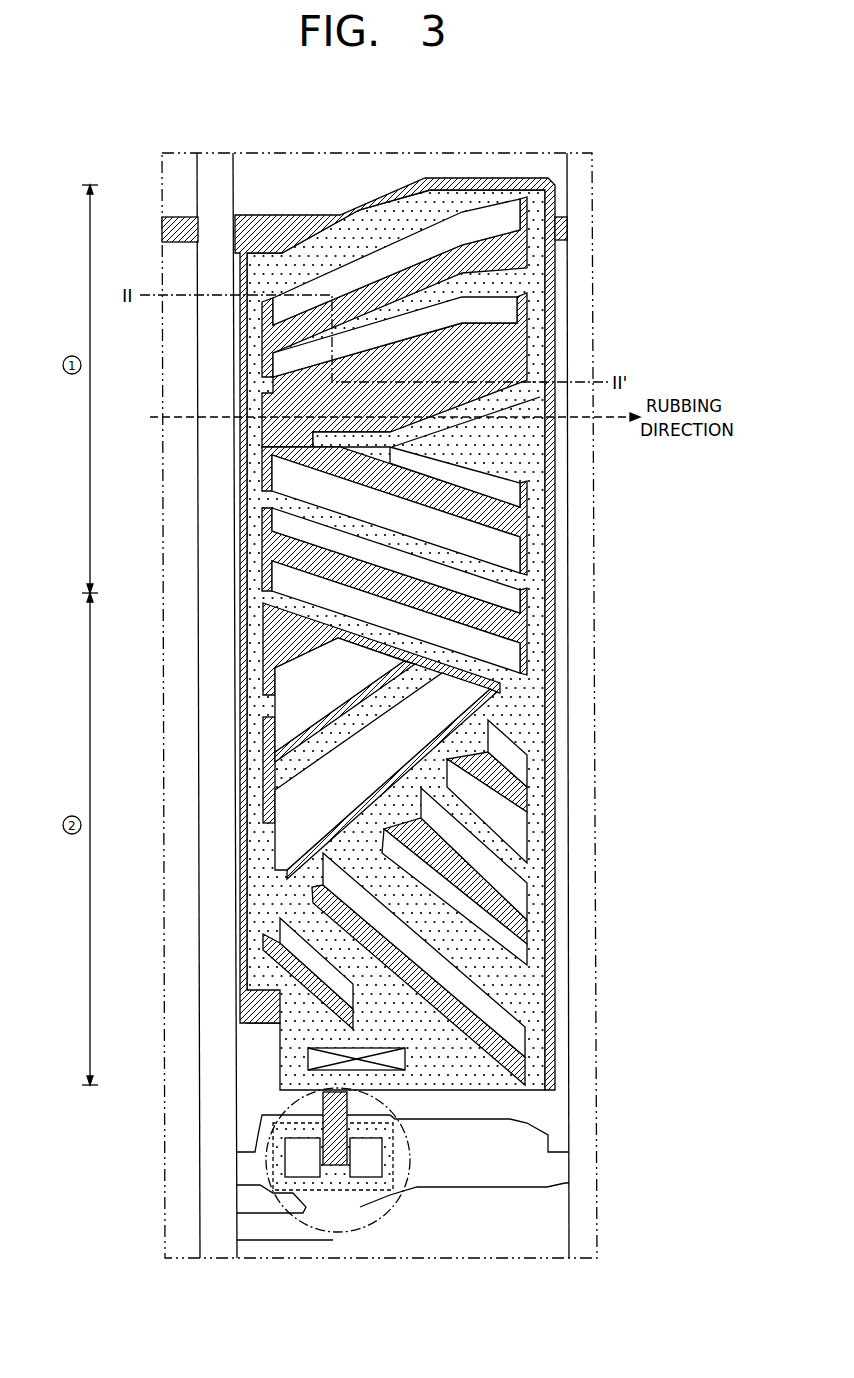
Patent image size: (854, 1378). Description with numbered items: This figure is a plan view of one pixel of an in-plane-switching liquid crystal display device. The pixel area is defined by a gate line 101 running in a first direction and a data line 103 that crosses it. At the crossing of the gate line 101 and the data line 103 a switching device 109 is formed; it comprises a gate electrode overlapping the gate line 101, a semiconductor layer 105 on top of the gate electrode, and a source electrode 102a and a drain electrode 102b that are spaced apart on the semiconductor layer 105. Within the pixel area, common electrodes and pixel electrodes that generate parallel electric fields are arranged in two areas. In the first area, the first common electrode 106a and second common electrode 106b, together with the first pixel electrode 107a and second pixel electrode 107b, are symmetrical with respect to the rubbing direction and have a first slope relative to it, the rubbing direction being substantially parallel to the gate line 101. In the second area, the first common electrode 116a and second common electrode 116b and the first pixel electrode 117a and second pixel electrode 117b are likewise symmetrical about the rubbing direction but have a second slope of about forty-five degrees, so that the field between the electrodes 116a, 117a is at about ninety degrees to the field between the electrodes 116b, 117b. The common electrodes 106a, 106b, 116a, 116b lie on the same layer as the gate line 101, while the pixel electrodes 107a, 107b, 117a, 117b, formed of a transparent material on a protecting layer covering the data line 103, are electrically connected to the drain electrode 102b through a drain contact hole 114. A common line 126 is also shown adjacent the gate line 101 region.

The gate line 101 is at (469, 1177).
The source electrode 102a is at (300, 1177).
The drain electrode 102b is at (333, 1172).
The data line 103 is at (212, 165).
The semiconductor layer 105 is at (342, 1178).
The first common electrode 106a is at (485, 322).
The second common electrode 106b is at (485, 561).
The first pixel electrode 107a is at (478, 640).
The second pixel electrode 107b is at (511, 489).
The switching device 109 is at (255, 1130).
The drain contact hole 114 is at (504, 1066).
The first common electrode 116a is at (486, 741).
The second common electrode 116b is at (486, 918).
The first pixel electrode 117a is at (492, 754).
The second pixel electrode 117b is at (494, 888).
The common line 126 is at (175, 228).